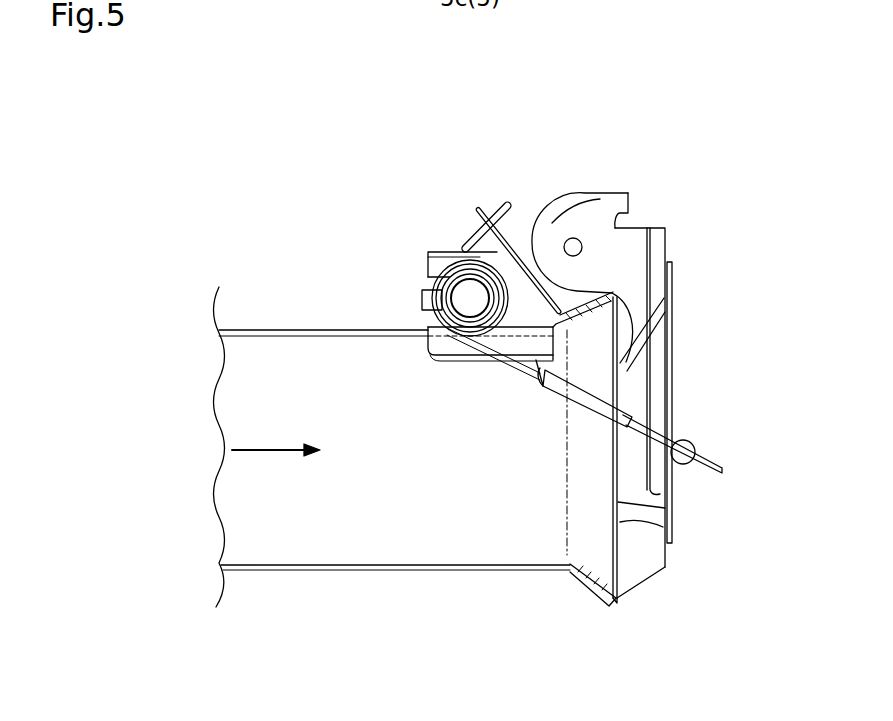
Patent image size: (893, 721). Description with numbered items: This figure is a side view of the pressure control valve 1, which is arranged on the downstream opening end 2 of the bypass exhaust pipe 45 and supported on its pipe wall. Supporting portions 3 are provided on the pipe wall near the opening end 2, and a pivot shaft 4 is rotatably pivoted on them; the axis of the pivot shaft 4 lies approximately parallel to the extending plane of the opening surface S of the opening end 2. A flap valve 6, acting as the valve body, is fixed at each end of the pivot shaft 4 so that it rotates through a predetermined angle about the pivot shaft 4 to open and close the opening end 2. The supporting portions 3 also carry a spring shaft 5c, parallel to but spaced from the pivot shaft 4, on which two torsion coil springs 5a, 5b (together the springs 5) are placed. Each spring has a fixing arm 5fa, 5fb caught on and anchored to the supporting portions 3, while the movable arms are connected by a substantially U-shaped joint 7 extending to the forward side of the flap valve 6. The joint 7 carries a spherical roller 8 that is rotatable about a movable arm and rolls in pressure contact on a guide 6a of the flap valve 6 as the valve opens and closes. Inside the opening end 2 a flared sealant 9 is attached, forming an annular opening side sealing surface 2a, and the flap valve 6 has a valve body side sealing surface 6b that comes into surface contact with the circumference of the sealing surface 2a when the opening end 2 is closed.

The pressure control valve 1 is at (357, 147).
The opening end 2 is at (657, 447).
The opening surface S is at (665, 526).
The opening side sealing surface 2a is at (641, 588).
The supporting portions 3 is at (618, 195).
The pivot shaft 4 is at (576, 241).
The bypass exhaust pipe 45 is at (265, 330).
The torsion coil springs 5 is at (452, 258).
The torsion coil spring 5a is at (430, 288).
The torsion coil spring 5b is at (404, 290).
The spring shaft 5c is at (455, 276).
The fixing arm 5fa is at (490, 207).
The fixing arm 5fb is at (481, 253).
The flap valve 6 is at (664, 240).
The guide 6a is at (673, 272).
The valve body side sealing surface 6b is at (594, 604).
The joint 7 is at (552, 390).
The roller 8 is at (694, 448).
The sealant 9 is at (572, 583).